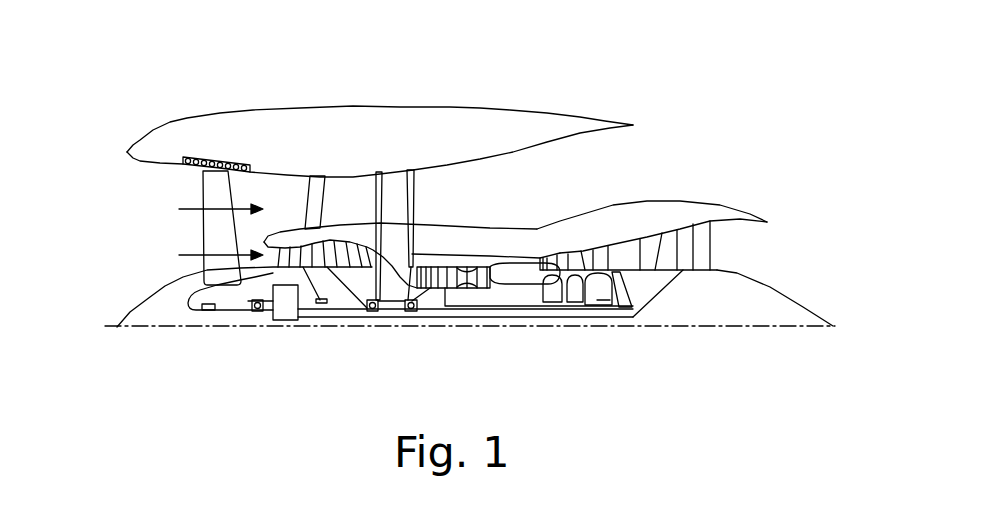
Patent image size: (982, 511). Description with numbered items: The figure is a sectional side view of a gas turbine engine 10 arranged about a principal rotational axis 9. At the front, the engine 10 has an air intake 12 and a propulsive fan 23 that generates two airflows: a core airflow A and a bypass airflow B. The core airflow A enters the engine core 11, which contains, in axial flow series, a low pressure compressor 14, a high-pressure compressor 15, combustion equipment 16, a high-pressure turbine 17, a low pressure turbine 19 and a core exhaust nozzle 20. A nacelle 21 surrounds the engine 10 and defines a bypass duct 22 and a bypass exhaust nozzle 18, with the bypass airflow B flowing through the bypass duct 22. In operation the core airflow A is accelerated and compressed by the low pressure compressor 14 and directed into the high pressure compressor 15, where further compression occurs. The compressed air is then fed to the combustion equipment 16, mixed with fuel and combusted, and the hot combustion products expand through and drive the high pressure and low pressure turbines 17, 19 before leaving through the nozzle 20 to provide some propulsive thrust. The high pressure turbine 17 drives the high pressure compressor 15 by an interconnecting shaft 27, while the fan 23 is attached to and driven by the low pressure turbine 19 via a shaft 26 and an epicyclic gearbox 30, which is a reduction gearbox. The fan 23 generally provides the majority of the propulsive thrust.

The principal rotational axis 9 is at (738, 328).
The gas turbine engine 10 is at (181, 117).
The core 11 is at (537, 247).
The air intake 12 is at (141, 182).
The low pressure compressor 14 is at (342, 252).
The high-pressure compressor 15 is at (466, 274).
The combustion equipment 16 is at (523, 280).
The high-pressure turbine 17 is at (580, 256).
The bypass exhaust nozzle 18 is at (688, 143).
The low pressure turbine 19 is at (693, 257).
The core exhaust nozzle 20 is at (766, 255).
The nacelle 21 is at (392, 120).
The bypass duct 22 is at (584, 169).
The propulsive fan 23 is at (206, 241).
The shaft 26 is at (434, 318).
The interconnecting shaft 27 is at (492, 316).
The epicyclic gearbox 30 is at (286, 320).
The core airflow A is at (209, 254).
The bypass airflow B is at (209, 208).